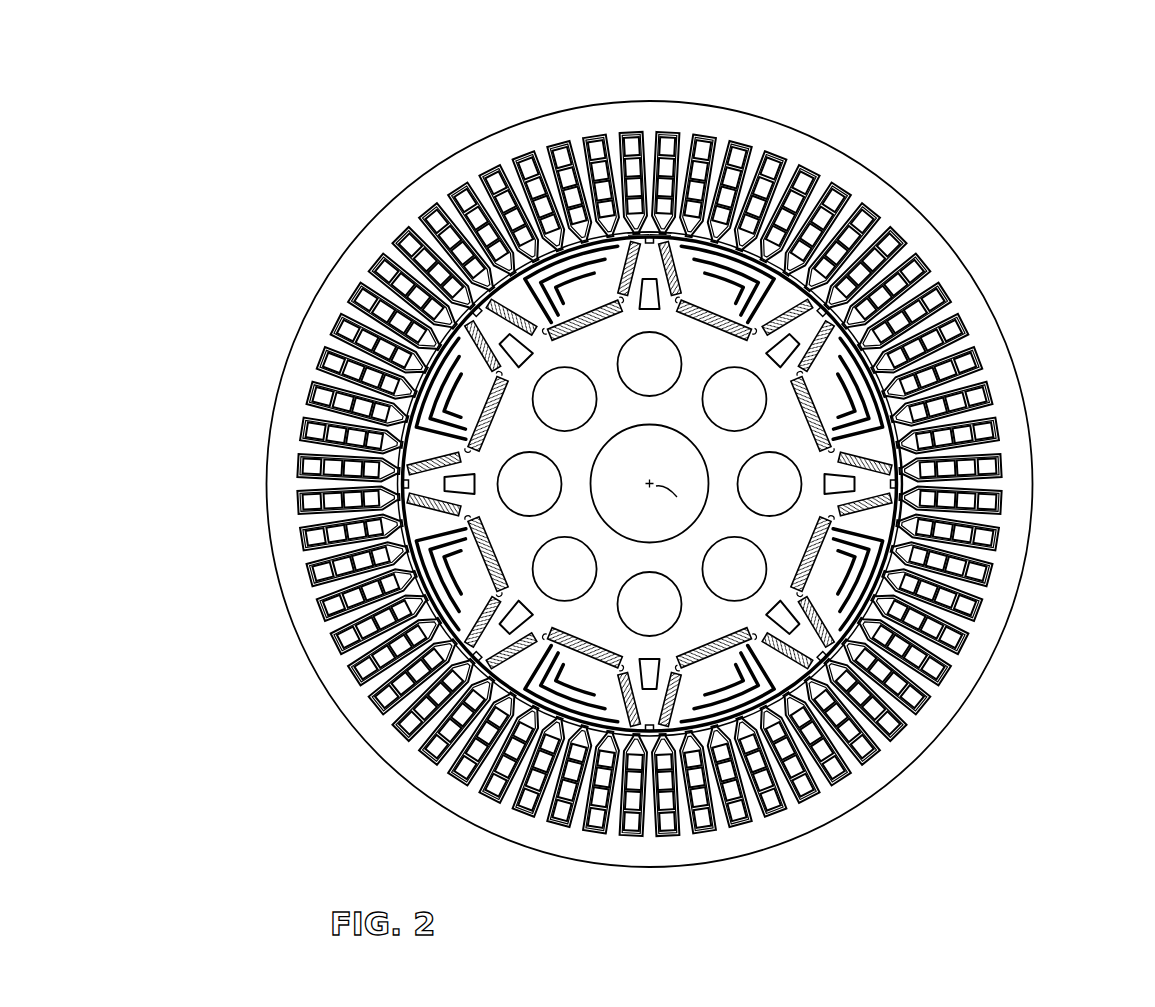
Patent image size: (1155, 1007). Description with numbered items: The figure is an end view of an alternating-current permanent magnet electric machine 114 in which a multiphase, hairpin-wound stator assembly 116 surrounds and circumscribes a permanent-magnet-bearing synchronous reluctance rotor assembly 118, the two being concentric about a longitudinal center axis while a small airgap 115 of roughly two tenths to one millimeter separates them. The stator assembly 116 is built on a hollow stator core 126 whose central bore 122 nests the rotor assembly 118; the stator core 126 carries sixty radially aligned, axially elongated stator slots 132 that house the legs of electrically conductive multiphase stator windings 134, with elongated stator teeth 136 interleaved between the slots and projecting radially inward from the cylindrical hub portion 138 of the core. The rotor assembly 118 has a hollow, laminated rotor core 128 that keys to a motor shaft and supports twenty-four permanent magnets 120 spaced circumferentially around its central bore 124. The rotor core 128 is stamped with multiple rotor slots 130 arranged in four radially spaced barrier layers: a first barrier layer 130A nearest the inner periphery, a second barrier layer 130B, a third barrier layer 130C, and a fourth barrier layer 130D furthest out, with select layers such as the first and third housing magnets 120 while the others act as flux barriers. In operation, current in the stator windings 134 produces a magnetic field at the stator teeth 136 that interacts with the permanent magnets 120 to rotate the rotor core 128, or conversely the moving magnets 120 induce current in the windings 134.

The electric machine 114 is at (1025, 156).
The airgap 115 is at (670, 232).
The stator assembly 116 is at (1028, 356).
The rotor assembly 118 is at (395, 445).
The permanent magnets 120 is at (390, 470).
The central bore 122 is at (905, 517).
The central bore 124 is at (617, 452).
The stator core 126 is at (984, 284).
The rotor core 128 is at (650, 226).
The rotor slots 130 is at (235, 520).
The first barrier layer 130A is at (549, 321).
The second barrier layer 130B is at (558, 315).
The third barrier layer 130C is at (566, 300).
The fourth barrier layer 130D is at (590, 268).
The stator slots 132 is at (980, 432).
The stator windings 134 is at (978, 393).
The stator teeth 136 is at (478, 416).
The cylindrical hub portion 138 is at (850, 170).